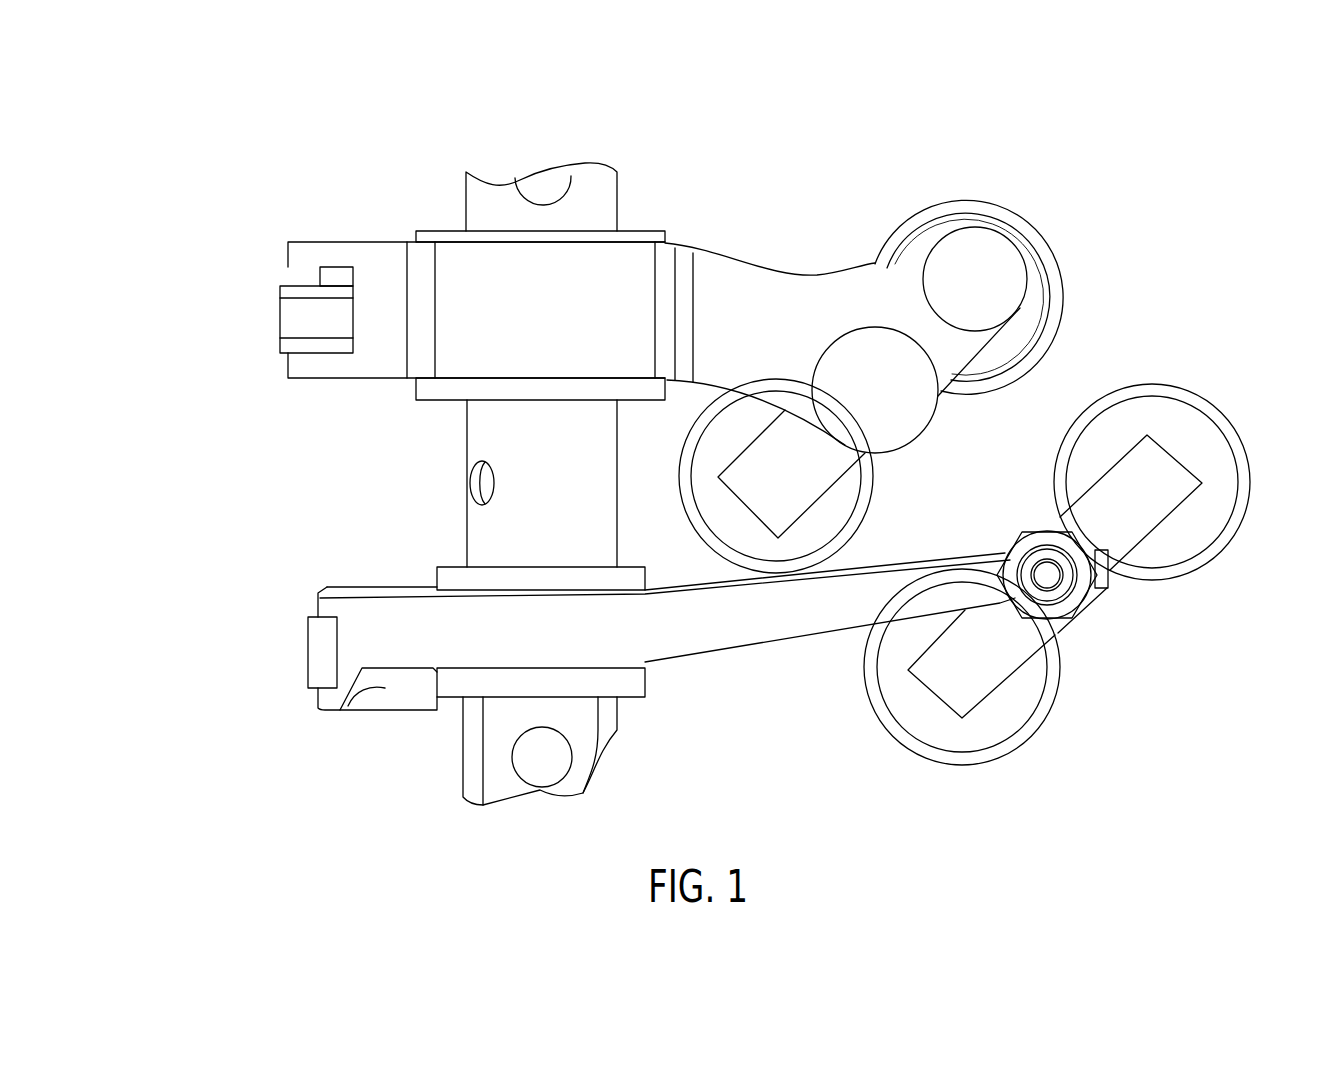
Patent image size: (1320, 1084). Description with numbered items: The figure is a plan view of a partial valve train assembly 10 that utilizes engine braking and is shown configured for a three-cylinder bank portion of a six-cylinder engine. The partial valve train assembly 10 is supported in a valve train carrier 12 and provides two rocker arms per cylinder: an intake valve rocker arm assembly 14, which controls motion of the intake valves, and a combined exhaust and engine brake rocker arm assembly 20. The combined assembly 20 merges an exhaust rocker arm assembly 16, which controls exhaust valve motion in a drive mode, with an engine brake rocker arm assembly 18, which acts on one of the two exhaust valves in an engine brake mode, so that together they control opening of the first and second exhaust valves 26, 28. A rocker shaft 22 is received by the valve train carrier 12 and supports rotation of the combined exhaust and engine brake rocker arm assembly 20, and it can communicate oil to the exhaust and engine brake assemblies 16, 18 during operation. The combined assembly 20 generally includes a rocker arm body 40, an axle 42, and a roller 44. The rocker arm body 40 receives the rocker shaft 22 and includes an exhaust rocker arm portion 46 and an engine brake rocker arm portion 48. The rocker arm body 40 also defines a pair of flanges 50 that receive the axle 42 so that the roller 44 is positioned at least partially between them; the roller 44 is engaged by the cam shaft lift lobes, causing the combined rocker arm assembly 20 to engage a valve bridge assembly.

The partial valve train assembly 10 is at (208, 166).
The valve train carrier 12 is at (495, 743).
The intake valve rocker arm assembly 14 is at (826, 648).
The exhaust rocker arm assembly 16 is at (932, 450).
The engine brake rocker arm assembly 18 is at (989, 267).
The combined exhaust and engine brake rocker arm assembly 20 is at (884, 321).
The rocker shaft 22 is at (467, 452).
The first exhaust valve 26 is at (930, 205).
The second exhaust valve 28 is at (690, 530).
The rocker arm body 40 is at (706, 260).
The axle 42 is at (320, 277).
The roller 44 is at (280, 318).
The exhaust rocker arm portion 46 is at (887, 432).
The engine brake rocker arm portion 48 is at (1013, 295).
The flanges 50 is at (310, 242).